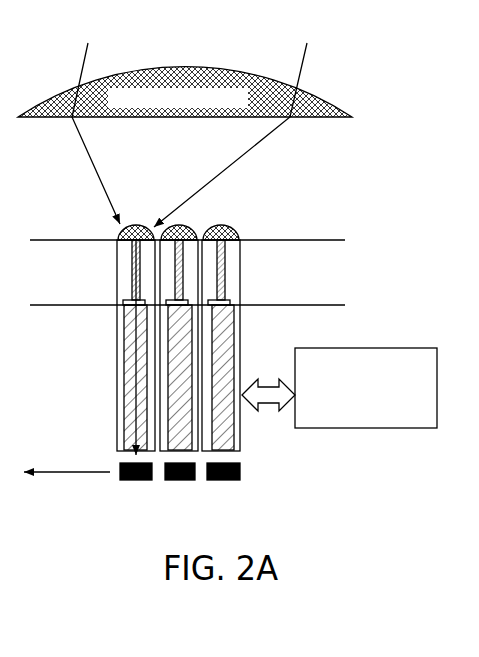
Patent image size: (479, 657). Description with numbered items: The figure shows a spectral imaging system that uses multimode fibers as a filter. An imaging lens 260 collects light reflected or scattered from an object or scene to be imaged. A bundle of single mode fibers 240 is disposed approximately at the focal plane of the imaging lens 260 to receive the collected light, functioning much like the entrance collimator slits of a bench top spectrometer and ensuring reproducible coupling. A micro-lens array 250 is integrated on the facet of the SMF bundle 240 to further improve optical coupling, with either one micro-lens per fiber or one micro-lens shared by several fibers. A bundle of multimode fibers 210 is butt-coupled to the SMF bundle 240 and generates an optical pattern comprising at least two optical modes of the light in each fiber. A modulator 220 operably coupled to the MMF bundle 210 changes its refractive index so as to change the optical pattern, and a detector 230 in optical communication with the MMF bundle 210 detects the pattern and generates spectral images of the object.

The bundle of multimode fibers 210 is at (264, 441).
The modulator 220 is at (386, 400).
The detector 230 is at (257, 505).
The bundle of single mode fibers 240 is at (273, 279).
The micro-lens array 250 is at (248, 222).
The imaging lens 260 is at (316, 99).